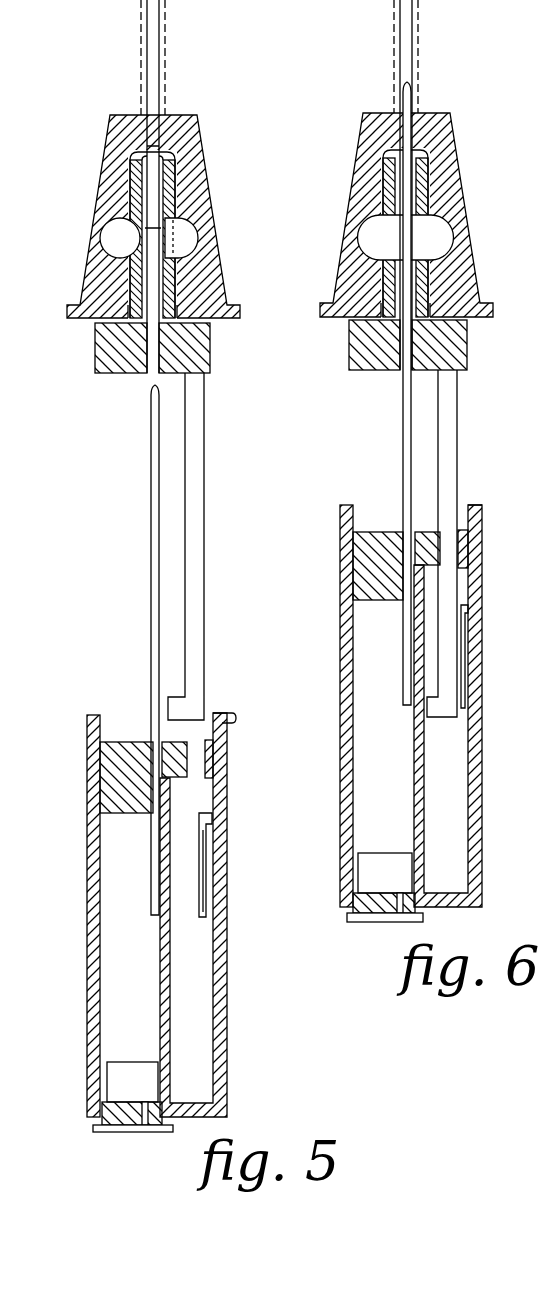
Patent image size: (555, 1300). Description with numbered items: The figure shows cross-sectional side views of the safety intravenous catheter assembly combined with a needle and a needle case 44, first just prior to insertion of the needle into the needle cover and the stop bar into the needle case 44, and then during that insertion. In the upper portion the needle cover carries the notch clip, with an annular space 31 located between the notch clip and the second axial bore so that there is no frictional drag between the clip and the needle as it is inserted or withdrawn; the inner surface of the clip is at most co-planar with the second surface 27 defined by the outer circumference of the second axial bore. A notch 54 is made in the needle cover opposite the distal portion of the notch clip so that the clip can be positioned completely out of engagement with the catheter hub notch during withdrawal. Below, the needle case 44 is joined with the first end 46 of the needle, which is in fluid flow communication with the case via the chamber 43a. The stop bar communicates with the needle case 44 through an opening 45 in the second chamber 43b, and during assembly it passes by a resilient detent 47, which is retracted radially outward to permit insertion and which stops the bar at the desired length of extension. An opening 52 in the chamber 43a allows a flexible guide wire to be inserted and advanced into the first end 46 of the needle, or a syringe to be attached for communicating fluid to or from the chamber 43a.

In FIG. 5, the second surface 27 is at (160, 283).
In FIG. 6, the second surface 27 is at (406, 216).
In FIG. 5, the annular space 31 is at (163, 229).
In FIG. 6, the annular space 31 is at (469, 233).
In FIG. 5, the notch 54 is at (137, 247).
In FIG. 6, the notch 54 is at (379, 201).
In FIG. 5, the chamber 43a is at (113, 967).
In FIG. 6, the chamber 43a is at (377, 709).
In FIG. 5, the second chamber 43b is at (205, 1005).
In FIG. 6, the second chamber 43b is at (448, 706).
In FIG. 5, the needle case 44 is at (227, 902).
In FIG. 6, the needle case 44 is at (442, 543).
In FIG. 5, the opening 45 is at (195, 745).
In FIG. 6, the opening 45 is at (470, 536).
In FIG. 5, the first end of the needle 46 is at (151, 868).
In FIG. 6, the first end of the needle 46 is at (407, 393).
In FIG. 5, the resilient detent 47 is at (212, 823).
In FIG. 6, the resilient detent 47 is at (464, 656).
In FIG. 5, the opening 52 is at (120, 1133).
In FIG. 6, the opening 52 is at (385, 917).